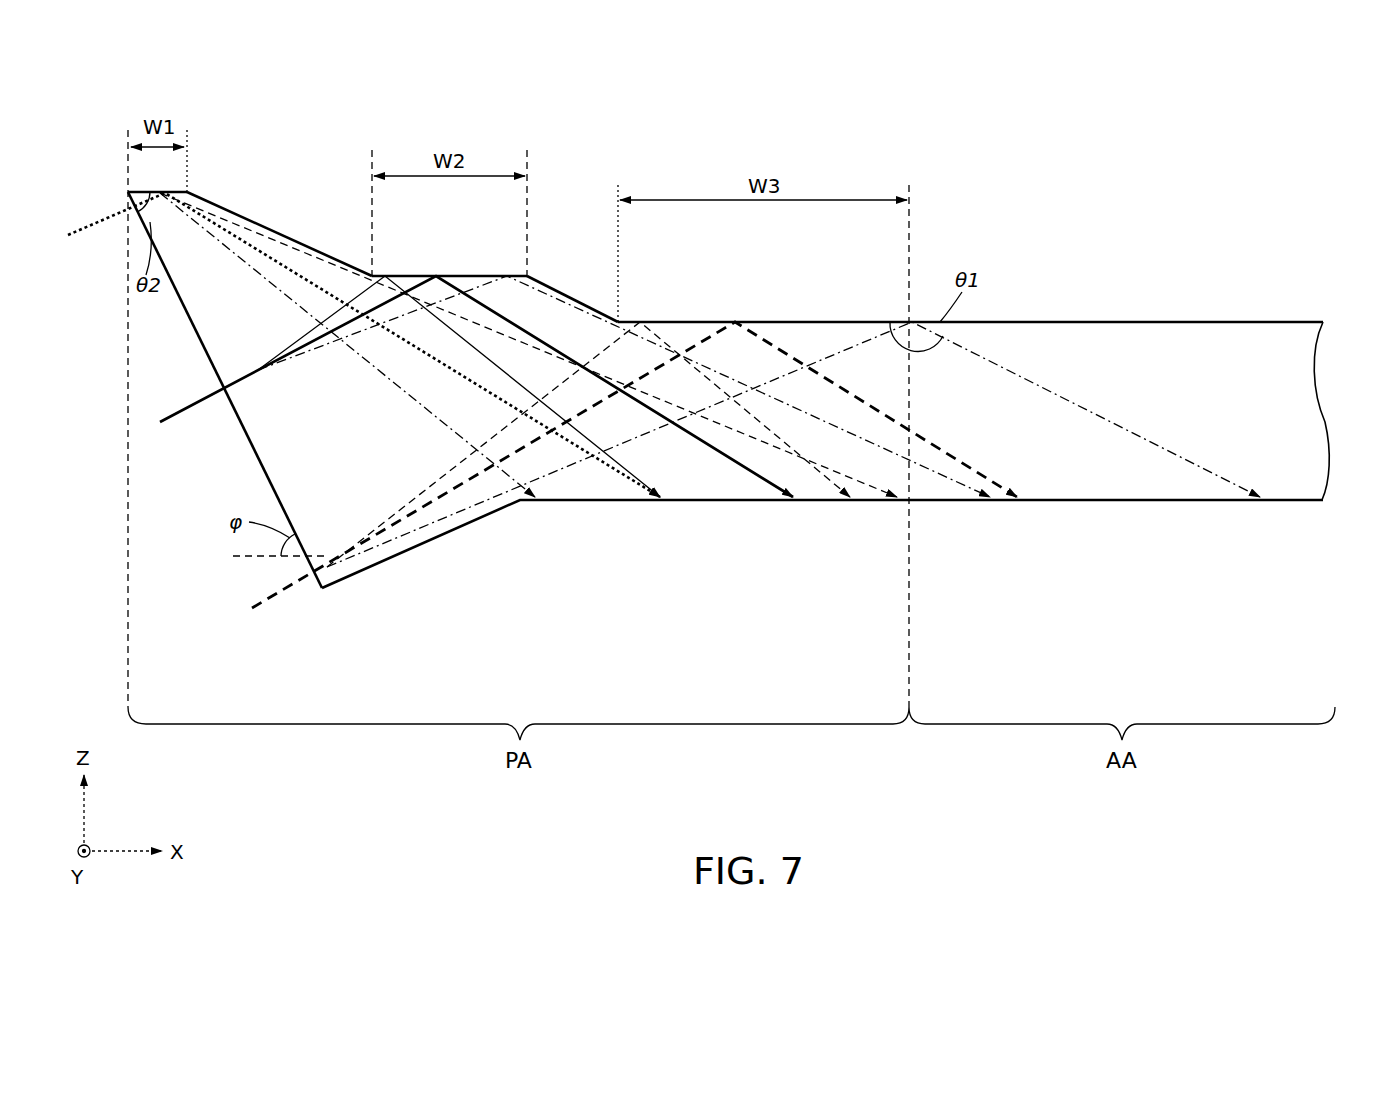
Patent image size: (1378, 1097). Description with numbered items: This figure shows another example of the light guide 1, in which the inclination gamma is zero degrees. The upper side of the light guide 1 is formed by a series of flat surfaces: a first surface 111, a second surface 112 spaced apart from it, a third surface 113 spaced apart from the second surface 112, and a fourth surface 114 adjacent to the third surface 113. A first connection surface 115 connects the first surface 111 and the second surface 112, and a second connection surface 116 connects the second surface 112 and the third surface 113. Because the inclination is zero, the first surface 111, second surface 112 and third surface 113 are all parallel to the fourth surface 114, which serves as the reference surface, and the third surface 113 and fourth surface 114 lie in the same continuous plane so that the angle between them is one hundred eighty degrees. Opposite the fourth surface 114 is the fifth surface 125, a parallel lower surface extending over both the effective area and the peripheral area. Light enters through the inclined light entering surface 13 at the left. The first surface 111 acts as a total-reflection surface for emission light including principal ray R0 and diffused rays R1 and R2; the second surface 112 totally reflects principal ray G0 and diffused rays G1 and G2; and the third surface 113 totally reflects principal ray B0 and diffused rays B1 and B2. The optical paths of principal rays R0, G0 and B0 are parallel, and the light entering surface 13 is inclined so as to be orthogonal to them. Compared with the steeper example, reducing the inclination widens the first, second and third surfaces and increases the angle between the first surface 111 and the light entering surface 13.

The light guide 1 is at (1308, 403).
The light entering surface 13 is at (251, 448).
The first surface 111 is at (184, 186).
The second surface 112 is at (478, 276).
The third surface 113 is at (790, 322).
The fourth surface 114 is at (1200, 322).
The first connection surface 115 is at (300, 243).
The second connection surface 116 is at (568, 298).
The fifth surface 125 is at (1142, 500).
The principal ray R0 is at (212, 228).
The diffused light ray R1 is at (258, 234).
The diffused light ray R2 is at (272, 287).
The principal ray G0 is at (300, 360).
The diffused light ray G1 is at (332, 360).
The diffused light ray G2 is at (370, 360).
The principal ray B0 is at (420, 522).
The diffused light ray B1 is at (462, 510).
The diffused light ray B2 is at (508, 493).